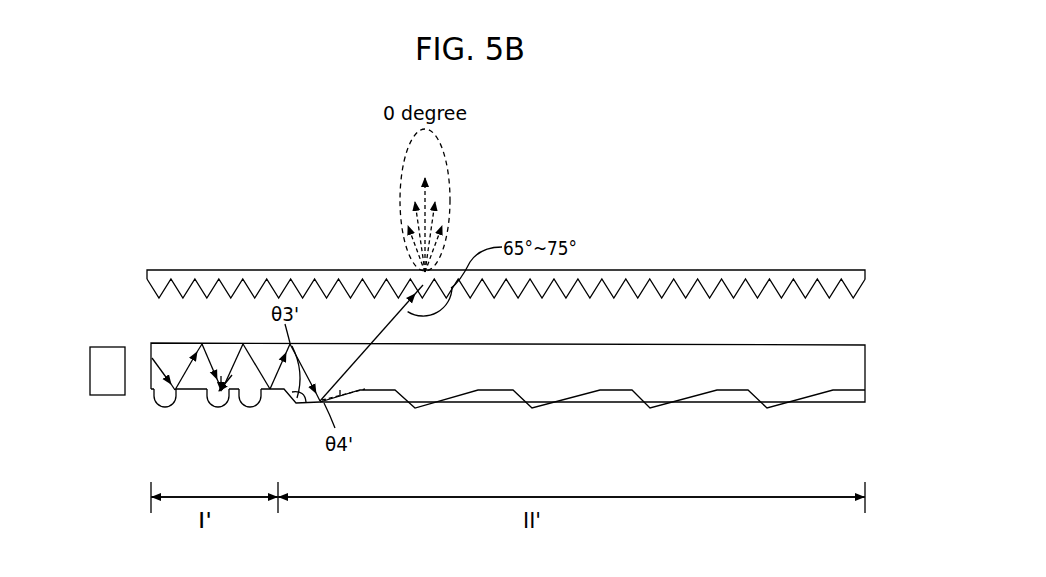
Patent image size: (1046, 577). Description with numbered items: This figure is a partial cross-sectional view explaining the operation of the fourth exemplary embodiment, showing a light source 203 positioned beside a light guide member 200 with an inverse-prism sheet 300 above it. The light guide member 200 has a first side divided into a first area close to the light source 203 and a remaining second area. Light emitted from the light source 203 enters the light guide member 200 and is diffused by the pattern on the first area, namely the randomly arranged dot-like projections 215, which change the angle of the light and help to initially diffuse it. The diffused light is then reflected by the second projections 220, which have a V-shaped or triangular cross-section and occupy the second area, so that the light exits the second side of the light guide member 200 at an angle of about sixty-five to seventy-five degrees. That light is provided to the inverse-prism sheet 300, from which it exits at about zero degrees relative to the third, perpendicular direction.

The inverse-prism sheet 300 is at (865, 272).
The light guide member 200 is at (865, 375).
The dot-like projections 215 is at (190, 401).
The second projections 220 is at (768, 409).
The light source 203 is at (110, 395).